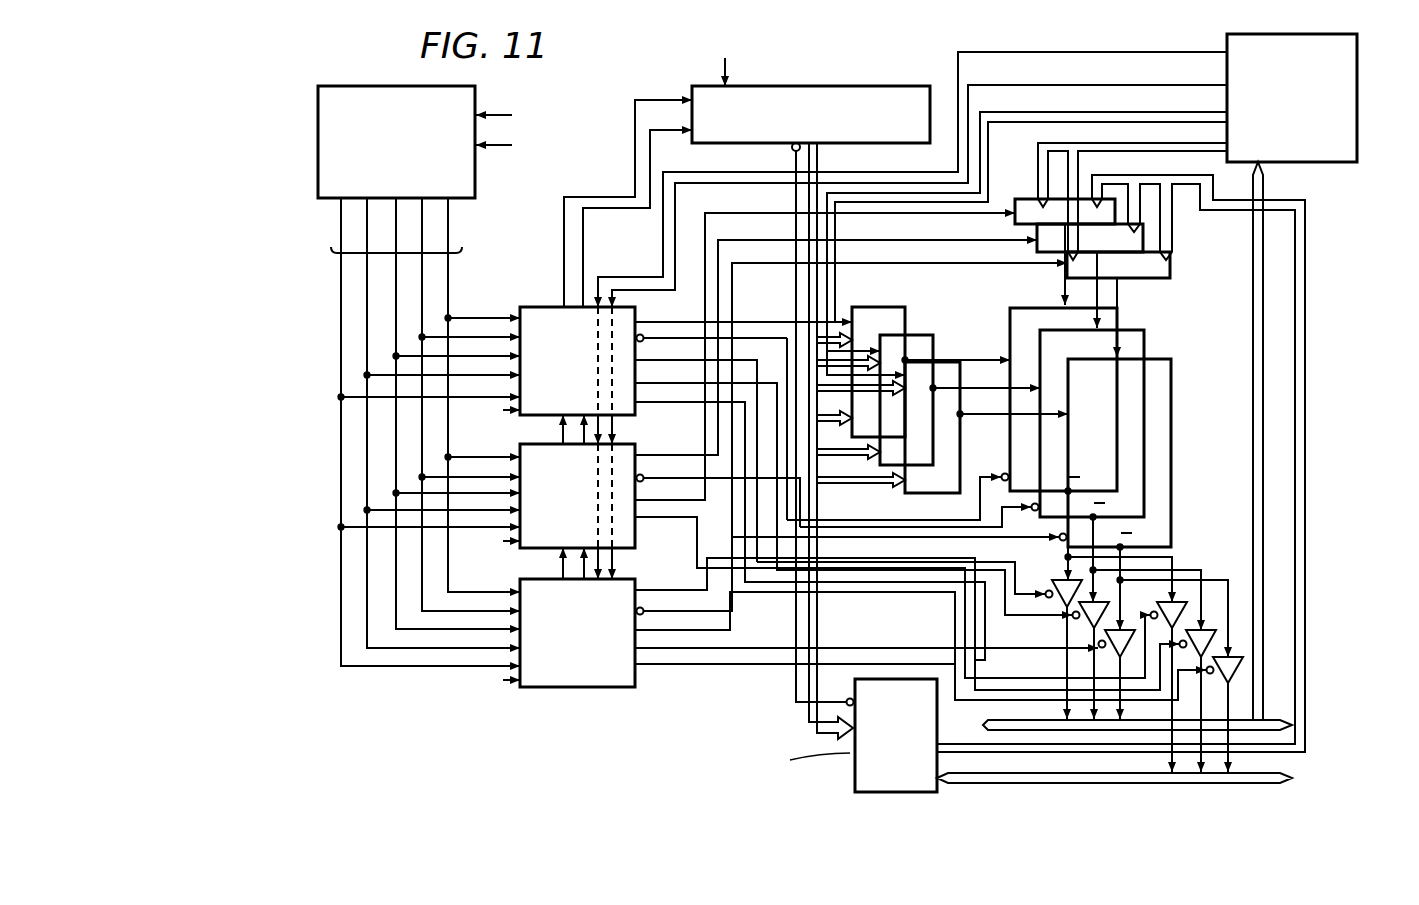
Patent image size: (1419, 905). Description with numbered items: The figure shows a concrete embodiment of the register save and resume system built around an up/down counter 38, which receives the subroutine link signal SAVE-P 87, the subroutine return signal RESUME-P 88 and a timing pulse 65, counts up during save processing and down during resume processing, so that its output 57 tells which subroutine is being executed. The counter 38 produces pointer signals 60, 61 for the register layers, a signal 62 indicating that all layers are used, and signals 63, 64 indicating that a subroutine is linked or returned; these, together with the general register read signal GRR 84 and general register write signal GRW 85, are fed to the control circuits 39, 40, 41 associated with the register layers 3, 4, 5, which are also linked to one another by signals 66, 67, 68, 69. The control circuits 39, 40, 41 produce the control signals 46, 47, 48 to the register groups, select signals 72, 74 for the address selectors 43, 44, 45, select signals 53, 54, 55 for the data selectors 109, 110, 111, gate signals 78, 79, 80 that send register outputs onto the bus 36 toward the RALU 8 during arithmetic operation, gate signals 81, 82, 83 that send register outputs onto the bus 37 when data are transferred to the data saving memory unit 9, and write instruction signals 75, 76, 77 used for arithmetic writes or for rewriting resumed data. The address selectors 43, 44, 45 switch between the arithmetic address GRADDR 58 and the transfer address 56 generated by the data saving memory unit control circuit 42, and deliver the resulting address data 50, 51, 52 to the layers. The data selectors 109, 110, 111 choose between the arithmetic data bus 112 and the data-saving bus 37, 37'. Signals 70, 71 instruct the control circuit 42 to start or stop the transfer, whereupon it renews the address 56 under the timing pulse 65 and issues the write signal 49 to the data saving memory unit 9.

The group of high-speed registers 3 is at (1117, 326).
The group of registers 4 is at (1144, 341).
The group of registers 5 is at (1171, 373).
The RALU 8 is at (1357, 128).
The data saving memory unit 9 is at (937, 719).
The bus 36 is at (1263, 481).
The bus 37 is at (1114, 790).
The bus 37' is at (1157, 463).
The up/down counter 38 is at (478, 185).
The control circuit 39 is at (628, 305).
The control circuit 40 is at (622, 446).
The control circuit 41 is at (625, 580).
The data saving memory unit control circuit 42 is at (898, 86).
The address selector 43 is at (885, 307).
The address selector 44 is at (925, 335).
The address selector 45 is at (957, 362).
The control signal 46 is at (657, 318).
The control signal 47 is at (650, 477).
The control signal 48 is at (650, 666).
The write signal 49 is at (790, 151).
The address data 50 is at (998, 389).
The address data 51 is at (978, 418).
The address data 52 is at (960, 445).
The select signal 53 is at (935, 215).
The select signal 54 is at (962, 241).
The select signal 55 is at (1005, 265).
The address 56 is at (822, 157).
The output of the counter 57 is at (462, 250).
The address (GRADDR) 58 is at (1008, 114).
The pointer signal 60 is at (339, 272).
The pointer signal 61 is at (363, 310).
The signal indicating all register layers are used 62 is at (393, 337).
The subroutine linked/returned signal 63 is at (425, 272).
The subroutine linked/returned signal 64 is at (448, 298).
The timing pulse 65 is at (735, 72).
The signal 66 is at (560, 561).
The signal 67 is at (582, 570).
The signal 68 is at (560, 428).
The signal 69 is at (582, 436).
The data saving memory unit start/stop signal 70 is at (562, 275).
The data saving memory unit start/stop signal 71 is at (585, 240).
The select signal 72 is at (745, 321).
The select signal 74 is at (787, 415).
The write instruction signal 75 is at (770, 340).
The write instruction signal 76 is at (757, 500).
The write instruction signal 77 is at (765, 634).
The gate signal 78 is at (858, 527).
The gate signal 79 is at (908, 520).
The gate signal 80 is at (912, 541).
The gate signal 81 is at (840, 565).
The gate signal 82 is at (872, 573).
The gate signal 83 is at (952, 585).
The general register read signal GRR 84 is at (1000, 56).
The general register write signal GRW 85 is at (1000, 89).
The SAVE-P 87 is at (502, 115).
The RESUME-P 88 is at (505, 145).
The data selector 109 is at (1018, 199).
The data selector 110 is at (1143, 238).
The data selector 111 is at (1170, 266).
The data bus 112 is at (1140, 143).